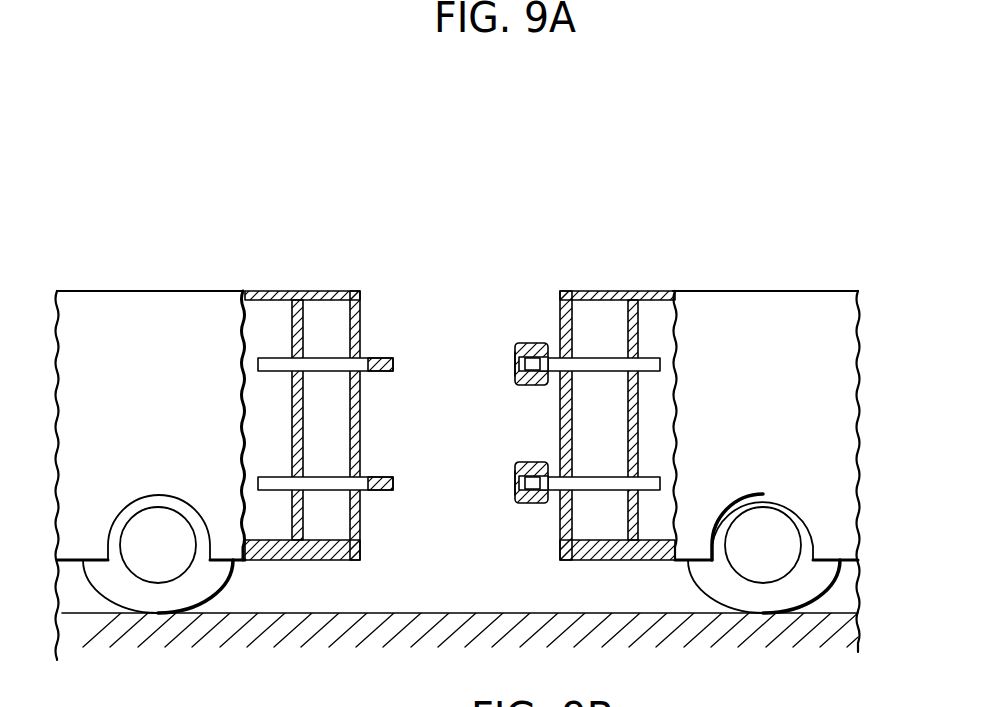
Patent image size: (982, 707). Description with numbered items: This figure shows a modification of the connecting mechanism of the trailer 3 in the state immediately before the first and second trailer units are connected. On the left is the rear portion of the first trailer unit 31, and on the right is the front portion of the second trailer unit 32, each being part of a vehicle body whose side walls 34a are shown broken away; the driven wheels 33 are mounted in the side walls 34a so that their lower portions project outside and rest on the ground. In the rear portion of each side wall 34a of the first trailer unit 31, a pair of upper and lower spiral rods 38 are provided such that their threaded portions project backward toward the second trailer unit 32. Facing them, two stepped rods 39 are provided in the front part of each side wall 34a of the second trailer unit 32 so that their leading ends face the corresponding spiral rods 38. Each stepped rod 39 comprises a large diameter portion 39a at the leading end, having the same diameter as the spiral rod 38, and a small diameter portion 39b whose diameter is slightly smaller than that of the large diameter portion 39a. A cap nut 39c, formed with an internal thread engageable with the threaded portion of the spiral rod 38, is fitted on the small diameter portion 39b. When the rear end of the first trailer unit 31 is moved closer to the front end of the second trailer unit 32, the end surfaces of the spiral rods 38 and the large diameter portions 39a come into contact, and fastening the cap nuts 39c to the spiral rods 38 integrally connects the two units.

The trailer 3 is at (533, 150).
The first trailer unit 31 is at (220, 278).
The second trailer unit 32 is at (725, 282).
The driven wheels 33 is at (165, 600).
The side walls 34a is at (142, 310).
The spiral rods 38 is at (397, 481).
The stepped rods 39 is at (593, 252).
The large diameter portion 39a is at (533, 343).
The small diameter portion 39b is at (590, 362).
The cap nut 39c is at (517, 350).